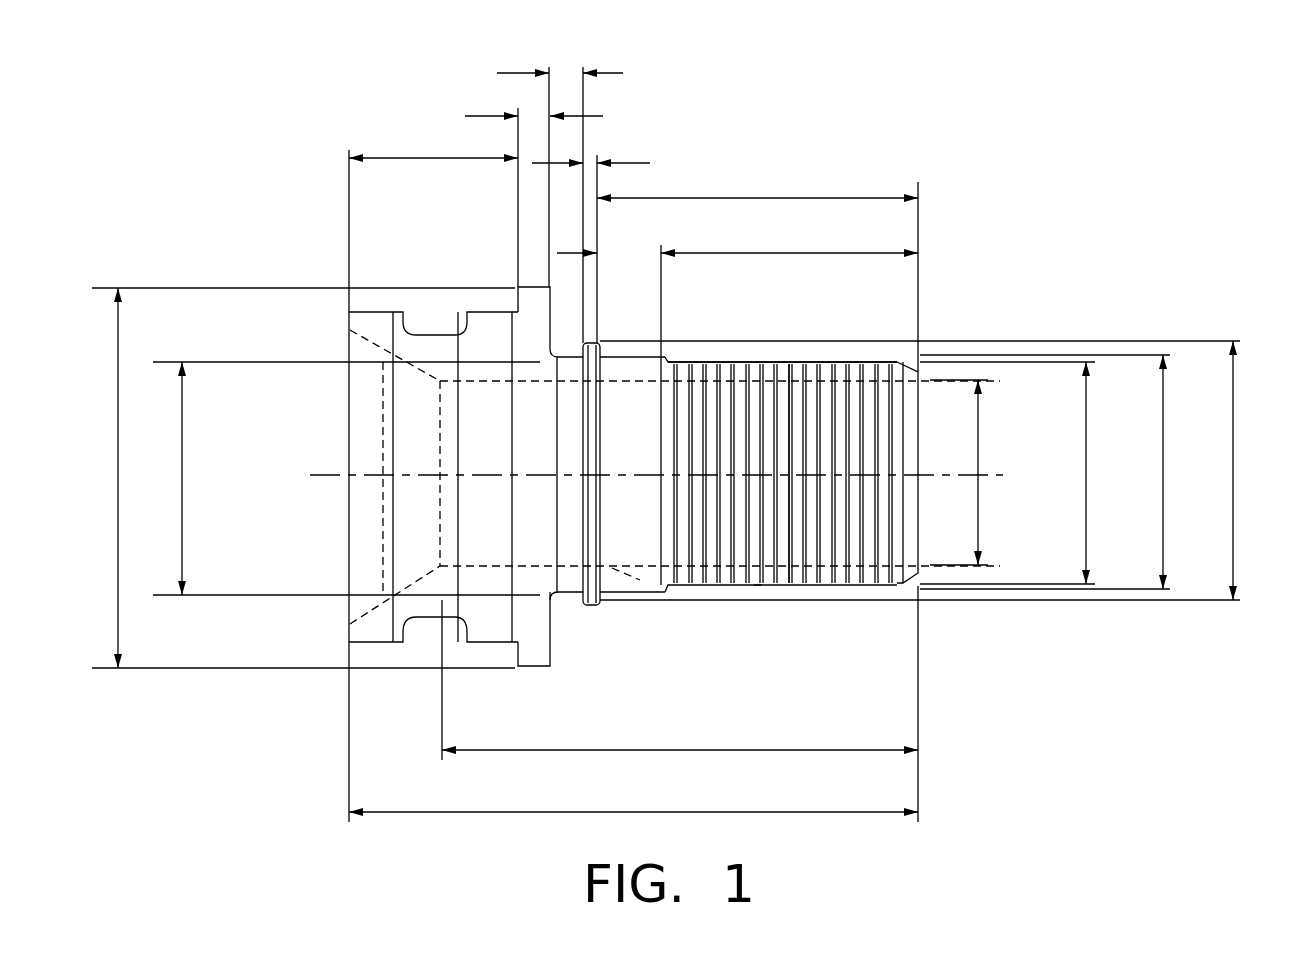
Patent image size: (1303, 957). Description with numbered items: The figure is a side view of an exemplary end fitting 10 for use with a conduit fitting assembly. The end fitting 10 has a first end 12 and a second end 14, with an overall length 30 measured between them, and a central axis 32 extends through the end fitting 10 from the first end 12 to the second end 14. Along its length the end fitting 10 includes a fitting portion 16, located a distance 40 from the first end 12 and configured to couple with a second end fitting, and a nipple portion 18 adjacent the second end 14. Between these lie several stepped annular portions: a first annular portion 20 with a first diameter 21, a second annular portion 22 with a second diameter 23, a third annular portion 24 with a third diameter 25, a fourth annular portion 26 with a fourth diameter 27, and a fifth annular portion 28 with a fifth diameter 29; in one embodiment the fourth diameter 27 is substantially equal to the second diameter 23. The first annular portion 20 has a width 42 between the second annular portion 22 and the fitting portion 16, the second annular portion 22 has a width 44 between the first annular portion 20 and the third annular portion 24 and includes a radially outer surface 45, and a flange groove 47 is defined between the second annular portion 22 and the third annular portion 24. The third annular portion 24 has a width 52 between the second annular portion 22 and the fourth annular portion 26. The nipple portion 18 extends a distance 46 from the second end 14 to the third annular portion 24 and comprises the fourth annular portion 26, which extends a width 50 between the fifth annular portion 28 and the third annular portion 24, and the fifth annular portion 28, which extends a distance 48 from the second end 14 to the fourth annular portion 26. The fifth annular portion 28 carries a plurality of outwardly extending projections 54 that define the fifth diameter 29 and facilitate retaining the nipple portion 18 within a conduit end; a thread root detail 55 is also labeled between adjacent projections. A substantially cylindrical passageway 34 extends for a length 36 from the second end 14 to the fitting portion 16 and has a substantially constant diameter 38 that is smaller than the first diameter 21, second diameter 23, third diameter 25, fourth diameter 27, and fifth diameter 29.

The end fitting 10 is at (1073, 78).
The first end 12 is at (338, 612).
The second end 14 is at (937, 402).
The fitting portion 16 is at (463, 266).
The nipple portion 18 is at (720, 332).
The first annular portion 20 is at (538, 283).
The first diameter 21 is at (118, 432).
The second annular portion 22 is at (565, 397).
The second diameter 23 is at (182, 472).
The third annular portion 24 is at (590, 605).
The third diameter 25 is at (1233, 420).
The fourth annular portion 26 is at (615, 582).
The fourth diameter 27 is at (1163, 440).
The fifth annular portion 28 is at (795, 576).
The fifth diameter 29 is at (1086, 472).
The overall length 30 is at (548, 812).
The central axis 32 is at (337, 480).
The passageway 34 is at (340, 435).
The length 36 is at (775, 752).
The diameter 38 is at (980, 516).
The distance 40 is at (442, 158).
The width 42 is at (480, 116).
The width 44 is at (630, 73).
The radially outer surface 45 is at (567, 352).
The distance 46 is at (718, 198).
The flange groove 47 is at (562, 620).
The distance 48 is at (755, 253).
The width 50 is at (601, 253).
The width 52 is at (640, 163).
The projections 54 is at (857, 362).
The thread root 55 is at (757, 588).